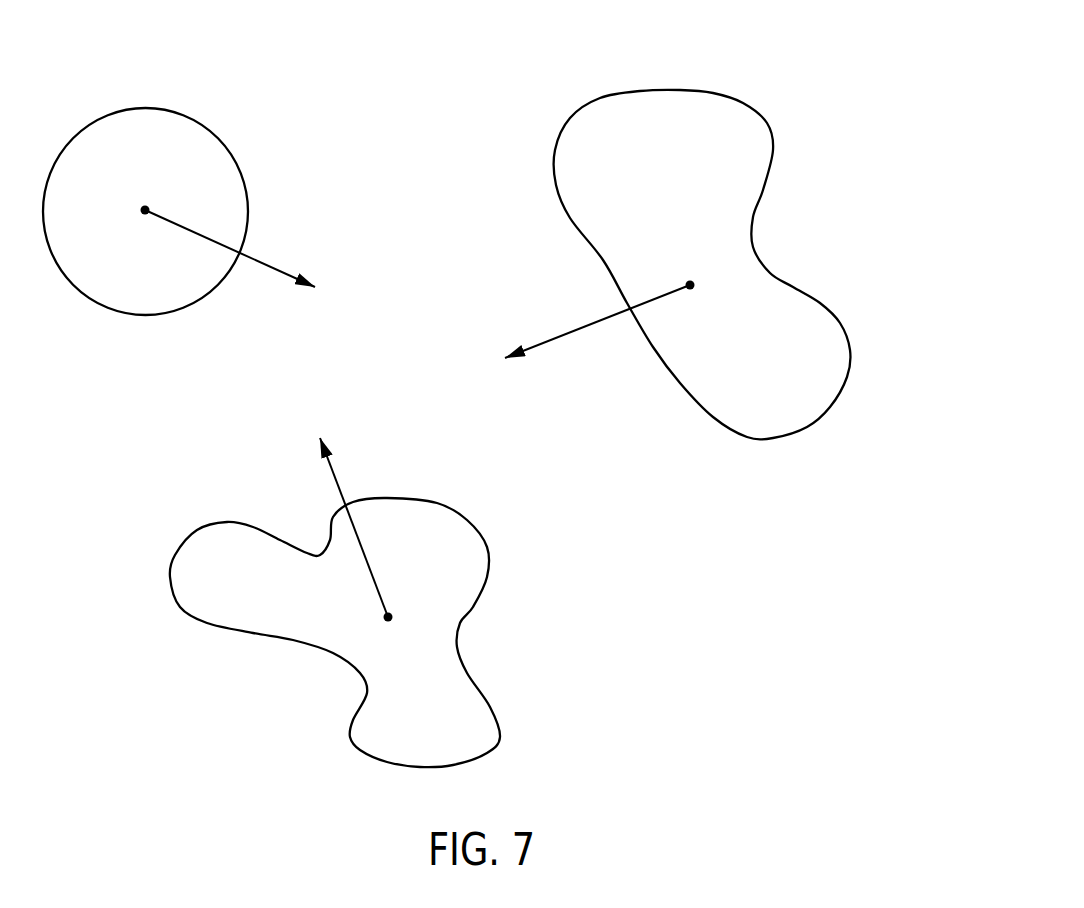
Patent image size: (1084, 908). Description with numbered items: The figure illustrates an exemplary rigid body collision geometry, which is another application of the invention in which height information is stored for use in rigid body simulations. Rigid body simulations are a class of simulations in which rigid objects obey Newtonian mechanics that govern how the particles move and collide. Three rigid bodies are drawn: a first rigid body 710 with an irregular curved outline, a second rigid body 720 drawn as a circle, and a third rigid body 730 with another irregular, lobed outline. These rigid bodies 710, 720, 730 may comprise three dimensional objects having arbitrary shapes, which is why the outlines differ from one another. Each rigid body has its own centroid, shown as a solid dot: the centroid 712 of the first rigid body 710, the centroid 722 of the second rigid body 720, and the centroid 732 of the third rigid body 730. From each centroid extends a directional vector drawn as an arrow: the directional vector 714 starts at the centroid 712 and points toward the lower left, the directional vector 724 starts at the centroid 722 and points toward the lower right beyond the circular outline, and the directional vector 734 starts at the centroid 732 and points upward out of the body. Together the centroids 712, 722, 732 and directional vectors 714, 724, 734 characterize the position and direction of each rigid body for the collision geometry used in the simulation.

The rigid body 710 is at (628, 90).
The centroid 712 is at (701, 305).
The directional vector 714 is at (567, 333).
The rigid body 720 is at (174, 112).
The centroid 722 is at (137, 192).
The directional vector 724 is at (266, 258).
The rigid body 730 is at (195, 531).
The centroid 732 is at (402, 636).
The directional vector 734 is at (338, 482).